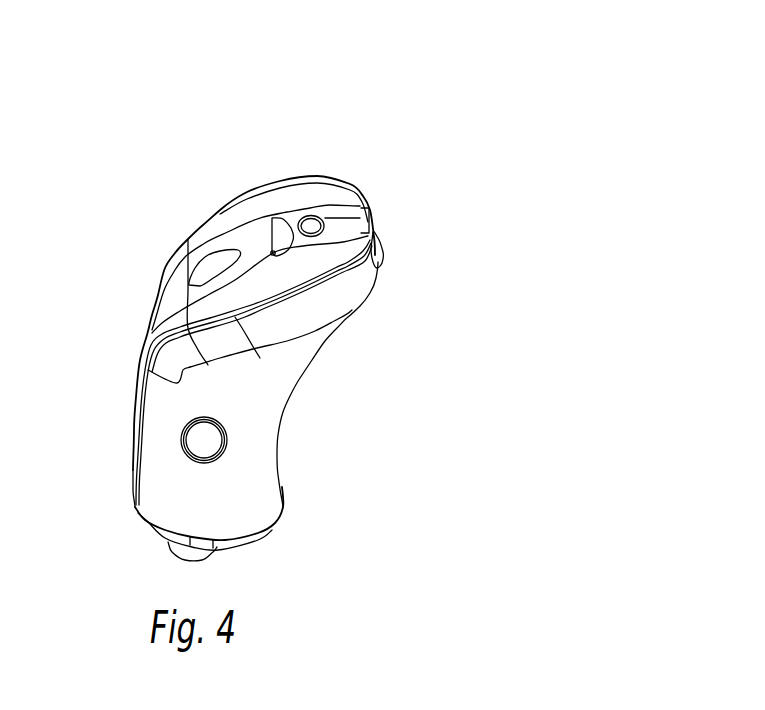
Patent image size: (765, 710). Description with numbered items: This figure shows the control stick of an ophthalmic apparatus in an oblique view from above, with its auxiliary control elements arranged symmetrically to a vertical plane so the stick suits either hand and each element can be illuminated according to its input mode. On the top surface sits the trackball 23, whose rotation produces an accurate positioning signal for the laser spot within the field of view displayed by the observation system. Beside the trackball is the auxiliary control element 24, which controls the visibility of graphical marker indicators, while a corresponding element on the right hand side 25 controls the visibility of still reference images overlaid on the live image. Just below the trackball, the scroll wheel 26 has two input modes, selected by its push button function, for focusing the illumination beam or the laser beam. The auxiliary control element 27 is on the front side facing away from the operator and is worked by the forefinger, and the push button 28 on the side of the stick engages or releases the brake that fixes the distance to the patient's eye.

The trackball 23 is at (318, 218).
The auxiliary control element 24 is at (277, 198).
The right hand side 25 is at (285, 273).
The scroll wheel 26 is at (205, 265).
The auxiliary control element 27 is at (385, 250).
The push button 28 is at (204, 440).